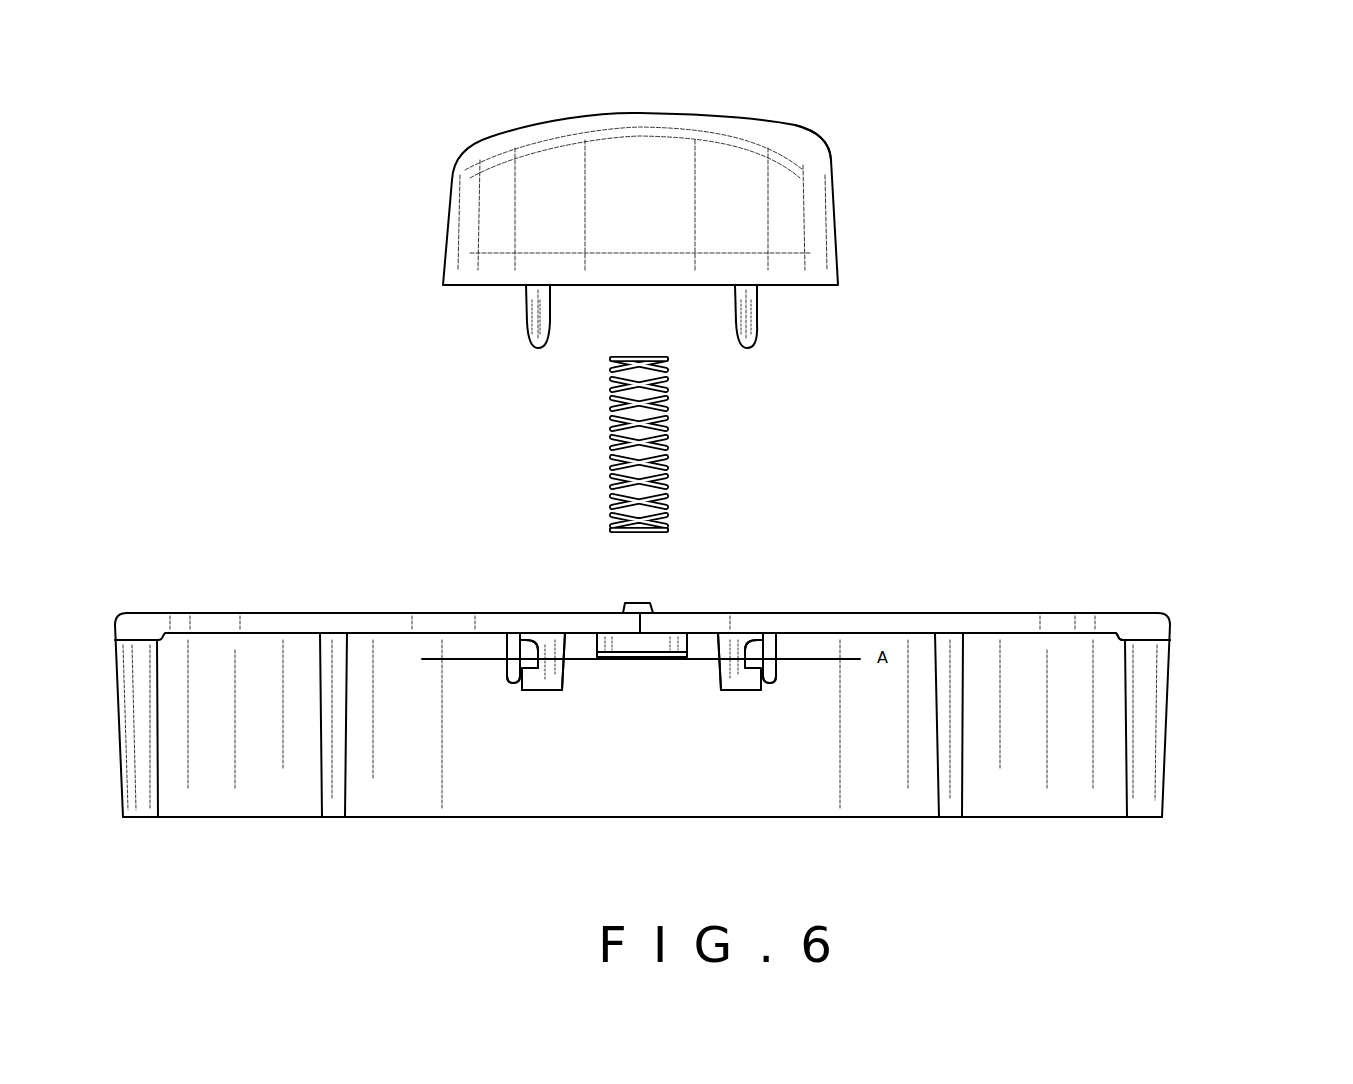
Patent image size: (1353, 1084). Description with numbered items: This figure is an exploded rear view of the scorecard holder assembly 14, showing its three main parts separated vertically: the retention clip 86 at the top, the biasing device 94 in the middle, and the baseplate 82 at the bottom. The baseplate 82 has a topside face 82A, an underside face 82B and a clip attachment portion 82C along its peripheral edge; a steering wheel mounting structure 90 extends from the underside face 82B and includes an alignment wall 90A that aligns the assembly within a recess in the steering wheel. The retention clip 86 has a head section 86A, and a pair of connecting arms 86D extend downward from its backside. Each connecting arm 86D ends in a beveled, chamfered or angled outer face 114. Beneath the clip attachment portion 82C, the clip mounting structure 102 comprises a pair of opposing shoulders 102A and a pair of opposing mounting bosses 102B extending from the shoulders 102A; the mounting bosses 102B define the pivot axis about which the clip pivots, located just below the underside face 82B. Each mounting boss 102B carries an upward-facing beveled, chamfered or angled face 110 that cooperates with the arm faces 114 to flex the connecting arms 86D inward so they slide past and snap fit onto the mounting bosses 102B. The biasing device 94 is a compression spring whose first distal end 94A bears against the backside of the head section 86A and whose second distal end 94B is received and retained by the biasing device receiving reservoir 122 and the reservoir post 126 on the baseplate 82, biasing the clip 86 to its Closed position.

The scorecard holder assembly 14 is at (990, 210).
The baseplate 82 is at (1028, 625).
The topside face 82A is at (890, 613).
The underside face 82B is at (1082, 638).
The clip attachment portion 82C is at (703, 622).
The retention clip 86 is at (733, 102).
The head section 86A is at (802, 180).
The connecting arms 86D is at (538, 325).
The steering wheel mounting structure 90 is at (1180, 762).
The alignment wall 90A is at (1063, 770).
The biasing device 94 is at (668, 445).
The first distal end 94A is at (632, 360).
The second distal end 94B is at (655, 531).
The clip mounting structure 102 is at (543, 718).
The shoulders 102A is at (515, 668).
The mounting bosses 102B is at (560, 672).
The beveled, chamfered or angled face 110 is at (535, 655).
The beveled, chamfered or angled outer face 114 is at (530, 327).
The biasing device receiving reservoir 122 is at (657, 657).
The biasing device receiving reservoir post 126 is at (643, 600).